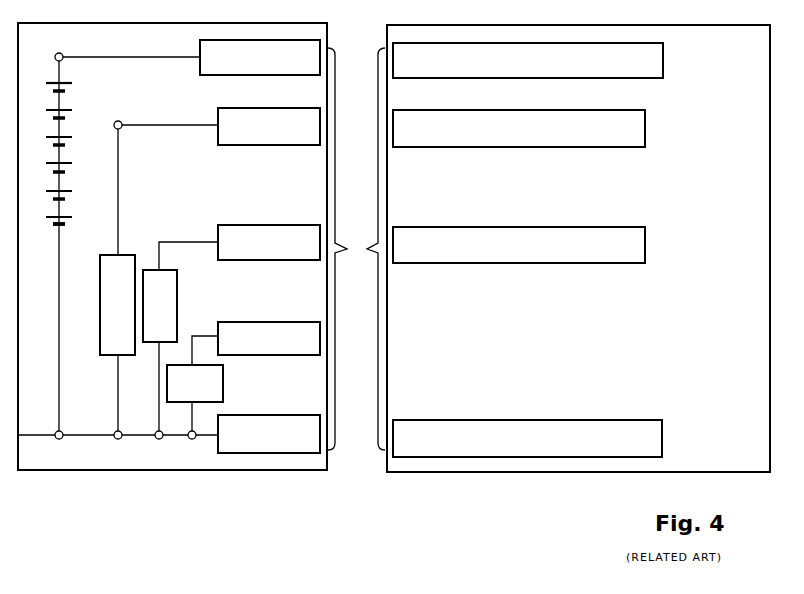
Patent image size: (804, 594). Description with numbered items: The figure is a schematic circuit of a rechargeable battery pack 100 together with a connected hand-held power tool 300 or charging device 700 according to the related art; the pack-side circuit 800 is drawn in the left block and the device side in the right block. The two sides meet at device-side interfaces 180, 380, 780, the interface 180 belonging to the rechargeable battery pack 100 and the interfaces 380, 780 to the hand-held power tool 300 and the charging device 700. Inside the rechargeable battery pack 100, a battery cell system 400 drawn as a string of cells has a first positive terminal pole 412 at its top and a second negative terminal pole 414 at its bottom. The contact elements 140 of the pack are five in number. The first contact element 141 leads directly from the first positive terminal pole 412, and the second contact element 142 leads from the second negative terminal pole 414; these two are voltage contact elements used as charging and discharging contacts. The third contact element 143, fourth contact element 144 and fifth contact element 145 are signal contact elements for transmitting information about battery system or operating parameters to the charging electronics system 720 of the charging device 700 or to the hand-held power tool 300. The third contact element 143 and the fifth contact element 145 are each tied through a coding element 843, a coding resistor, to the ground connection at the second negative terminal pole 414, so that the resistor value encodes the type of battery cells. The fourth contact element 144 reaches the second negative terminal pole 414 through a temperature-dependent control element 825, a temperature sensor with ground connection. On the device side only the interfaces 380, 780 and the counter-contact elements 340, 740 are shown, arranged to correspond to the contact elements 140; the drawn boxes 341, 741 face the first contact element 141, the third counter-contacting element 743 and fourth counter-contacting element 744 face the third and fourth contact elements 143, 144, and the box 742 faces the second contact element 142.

The rechargeable battery pack 100 is at (143, 479).
The battery circuit 800 is at (118, 246).
The battery cell system 400 is at (70, 83).
The first positive terminal pole 412 is at (67, 72).
The second negative terminal pole 414 is at (64, 234).
The coding element 843 is at (161, 328).
The temperature-dependent control element 825 is at (160, 306).
The contact elements 140 is at (260, 246).
The first contact element 141 is at (260, 57).
The third contact element 143 is at (269, 126).
The fourth contact element 144 is at (269, 242).
The fifth contact element 145 is at (269, 338).
The second contact element 142 is at (269, 434).
The device-side interface 180 is at (349, 246).
The interface 380 is at (364, 249).
The interface 780 is at (368, 252).
The hand-held power tool 300 is at (578, 277).
The charging device 700 is at (578, 277).
The charging electronics system 720 is at (549, 479).
The counter-contact elements 340 is at (528, 250).
The positive terminal 341 is at (528, 250).
The counter-contact elements 740 is at (528, 250).
The positive terminal 741 is at (528, 60).
The third counter-contacting element 743 is at (519, 128).
The fourth counter-contacting element 744 is at (519, 245).
The negative terminal 742 is at (527, 438).